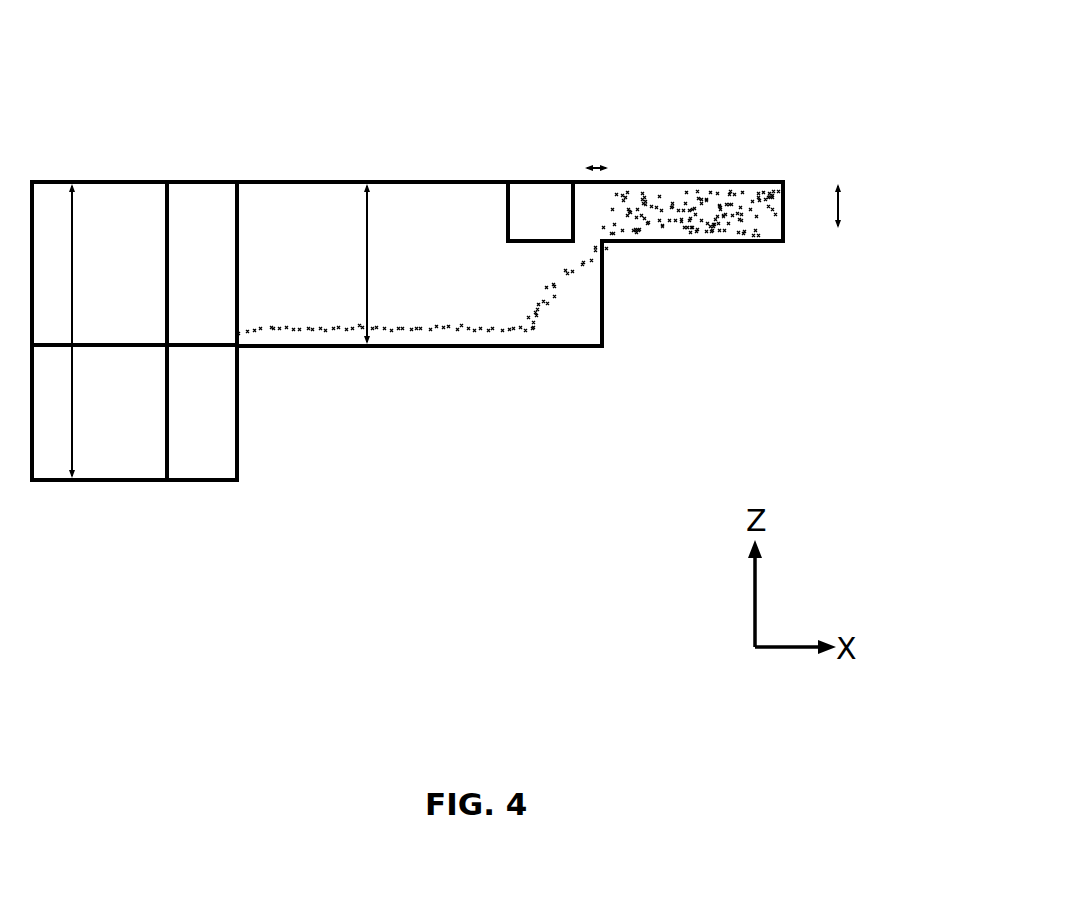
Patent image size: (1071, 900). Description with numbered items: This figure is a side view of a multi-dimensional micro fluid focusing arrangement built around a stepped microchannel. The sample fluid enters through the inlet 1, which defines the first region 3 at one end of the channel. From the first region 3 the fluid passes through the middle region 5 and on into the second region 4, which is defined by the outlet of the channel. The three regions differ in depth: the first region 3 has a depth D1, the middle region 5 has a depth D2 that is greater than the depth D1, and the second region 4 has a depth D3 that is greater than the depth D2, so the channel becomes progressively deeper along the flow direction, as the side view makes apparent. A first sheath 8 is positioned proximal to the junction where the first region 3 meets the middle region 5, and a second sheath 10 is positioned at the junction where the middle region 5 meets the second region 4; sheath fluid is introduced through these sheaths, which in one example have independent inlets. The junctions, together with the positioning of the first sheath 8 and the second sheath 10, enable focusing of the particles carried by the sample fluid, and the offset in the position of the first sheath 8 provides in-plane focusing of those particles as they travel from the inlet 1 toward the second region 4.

The inlet 1 is at (783, 218).
The first region 3 is at (661, 185).
The second region 4 is at (100, 205).
The middle region 5 is at (317, 200).
The first sheath 8 is at (531, 185).
The second sheath 10 is at (207, 183).
The depth of the first region D1 is at (838, 208).
The depth of the middle region D2 is at (367, 305).
The depth of the second region D3 is at (70, 445).